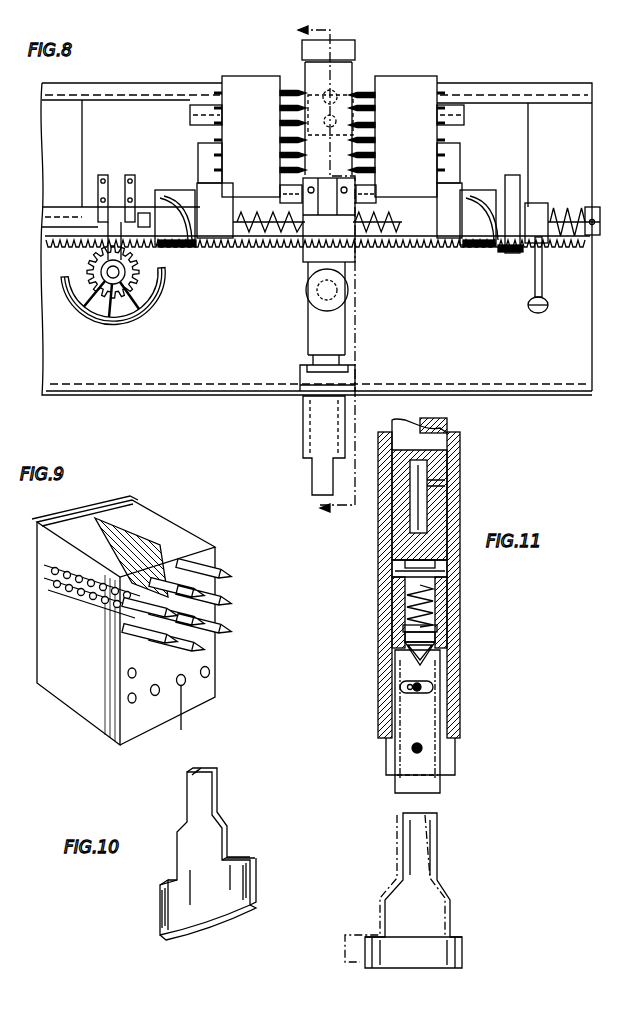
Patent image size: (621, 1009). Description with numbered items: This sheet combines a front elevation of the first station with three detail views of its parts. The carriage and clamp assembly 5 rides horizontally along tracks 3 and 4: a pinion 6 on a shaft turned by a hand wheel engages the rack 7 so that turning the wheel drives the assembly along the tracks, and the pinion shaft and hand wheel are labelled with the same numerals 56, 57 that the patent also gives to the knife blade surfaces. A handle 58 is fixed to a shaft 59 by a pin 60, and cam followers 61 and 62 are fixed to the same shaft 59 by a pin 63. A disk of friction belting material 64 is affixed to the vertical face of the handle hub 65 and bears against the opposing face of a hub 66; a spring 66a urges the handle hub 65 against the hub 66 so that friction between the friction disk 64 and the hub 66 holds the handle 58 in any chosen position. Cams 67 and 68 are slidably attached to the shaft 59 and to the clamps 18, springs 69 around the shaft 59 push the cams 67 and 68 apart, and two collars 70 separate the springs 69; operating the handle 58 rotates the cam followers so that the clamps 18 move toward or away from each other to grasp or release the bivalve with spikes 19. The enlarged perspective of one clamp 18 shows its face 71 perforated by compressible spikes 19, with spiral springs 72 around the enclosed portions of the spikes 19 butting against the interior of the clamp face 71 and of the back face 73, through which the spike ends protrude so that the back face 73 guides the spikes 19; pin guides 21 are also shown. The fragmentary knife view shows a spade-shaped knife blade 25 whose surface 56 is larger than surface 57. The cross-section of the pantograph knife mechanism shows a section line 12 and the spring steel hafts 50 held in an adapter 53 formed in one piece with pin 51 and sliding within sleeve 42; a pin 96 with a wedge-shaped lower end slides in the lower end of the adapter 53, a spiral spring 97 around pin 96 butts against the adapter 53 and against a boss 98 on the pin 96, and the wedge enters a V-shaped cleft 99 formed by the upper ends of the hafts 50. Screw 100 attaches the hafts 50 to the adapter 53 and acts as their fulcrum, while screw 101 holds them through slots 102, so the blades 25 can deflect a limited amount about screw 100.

In FIG. 8, the track 3 is at (568, 90).
In FIG. 8, the track 4 is at (58, 212).
In FIG. 8, the carriage and clamp assembly 5 is at (283, 72).
In FIG. 8, the pinion 6 is at (125, 318).
In FIG. 8, the rack 7 is at (46, 262).
In FIG. 8, the section line 12- 12 is at (314, 274).
In FIG. 8, the clamp 18 is at (260, 133).
In FIG. 9, the clamp 18 is at (94, 691).
In FIG. 8, the spike 19 is at (367, 107).
In FIG. 9, the spike 19 is at (232, 630).
In FIG. 9, the pin guides 21 is at (128, 660).
In FIG. 11, the knife blade 25 is at (462, 959).
In FIG. 10, the knife blade 25 is at (207, 903).
In FIG. 11, the sleeve 42 is at (378, 660).
In FIG. 11, the haft 50 is at (428, 786).
In FIG. 10, the haft 50 is at (207, 793).
In FIG. 11, the pin 51 is at (420, 498).
In FIG. 11, the adapter 53 is at (441, 567).
In FIG. 8, the surface 56 is at (104, 318).
In FIG. 10, the surface 56 is at (250, 885).
In FIG. 8, the surface 57 is at (156, 310).
In FIG. 10, the surface 57 is at (166, 920).
In FIG. 8, the handle 58 is at (545, 289).
In FIG. 8, the shaft 59 is at (290, 258).
In FIG. 8, the pin 60 is at (550, 212).
In FIG. 8, the cam follower 61 is at (497, 250).
In FIG. 8, the cam follower 62 is at (178, 247).
In FIG. 8, the pin 63 is at (172, 202).
In FIG. 8, the friction disk 64 is at (517, 190).
In FIG. 8, the handle hub 65 is at (532, 202).
In FIG. 8, the hub 66 is at (511, 255).
In FIG. 8, the spring 66a is at (572, 206).
In FIG. 8, the cam 67 is at (462, 252).
In FIG. 8, the cam 68 is at (200, 246).
In FIG. 8, the spring 69 is at (262, 237).
In FIG. 8, the collar 70 is at (318, 256).
In FIG. 9, the clamp face 71 is at (205, 698).
In FIG. 9, the spiral spring 72 is at (92, 556).
In FIG. 9, the back face 73 is at (70, 525).
In FIG. 11, the pin 96 is at (405, 640).
In FIG. 11, the spiral spring 97 is at (440, 600).
In FIG. 11, the boss 98 is at (438, 630).
In FIG. 11, the V-shaped cleft 99 is at (434, 655).
In FIG. 11, the screw 100 is at (422, 749).
In FIG. 11, the screw 101 is at (433, 689).
In FIG. 11, the slot 102 is at (400, 689).